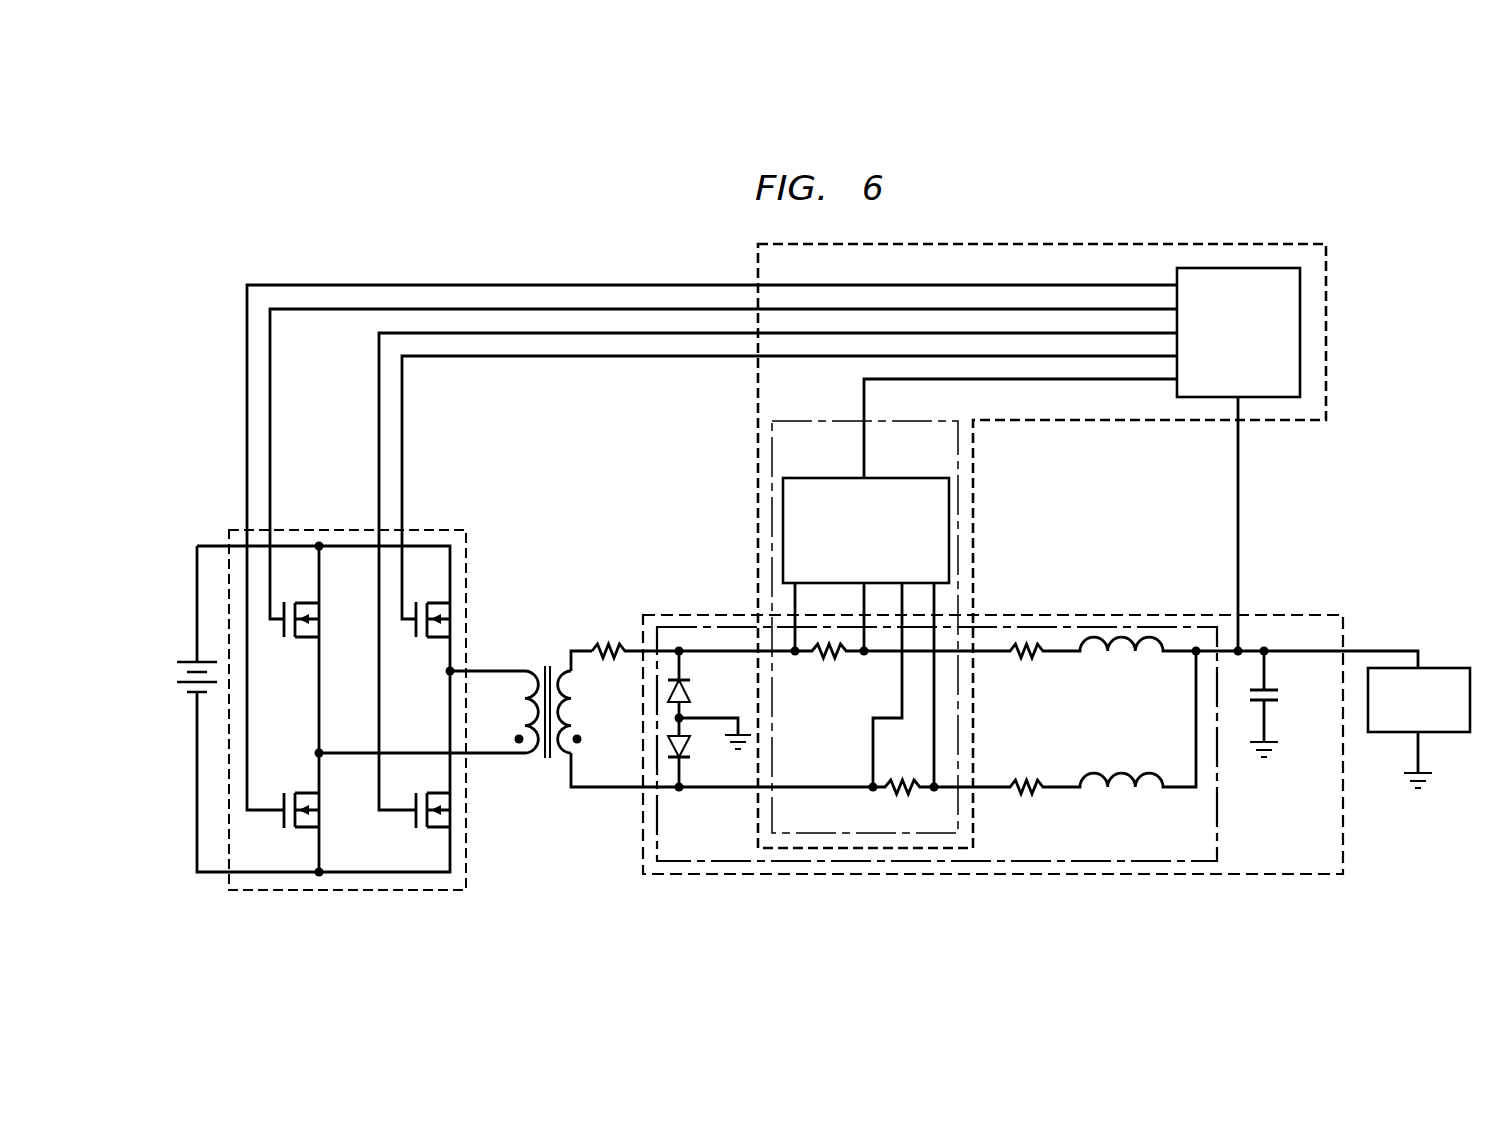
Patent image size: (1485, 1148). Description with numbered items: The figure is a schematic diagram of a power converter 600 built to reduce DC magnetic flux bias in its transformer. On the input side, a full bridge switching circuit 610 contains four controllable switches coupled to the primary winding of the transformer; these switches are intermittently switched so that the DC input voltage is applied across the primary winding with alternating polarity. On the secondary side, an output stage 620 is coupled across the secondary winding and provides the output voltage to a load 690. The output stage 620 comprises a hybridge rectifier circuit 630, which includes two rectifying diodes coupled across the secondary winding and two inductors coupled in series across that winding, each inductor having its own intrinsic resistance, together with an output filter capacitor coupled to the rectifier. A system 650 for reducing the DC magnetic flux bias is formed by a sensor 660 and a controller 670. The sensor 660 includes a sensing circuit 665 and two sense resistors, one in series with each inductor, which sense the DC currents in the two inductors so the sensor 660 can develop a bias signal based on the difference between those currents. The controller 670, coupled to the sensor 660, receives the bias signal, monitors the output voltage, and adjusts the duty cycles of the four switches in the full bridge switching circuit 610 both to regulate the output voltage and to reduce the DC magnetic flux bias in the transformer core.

The power converter 600 is at (317, 238).
The full bridge switching circuit 610 is at (453, 530).
The output stage 620 is at (673, 615).
The hybridge rectifier circuit 630 is at (1217, 848).
The system for reducing the DC magnetic flux bias 650 is at (1326, 320).
The sensor 660 is at (800, 421).
The sensing circuit 665 is at (799, 478).
The controller 670 is at (1177, 271).
The load 690 is at (1455, 668).